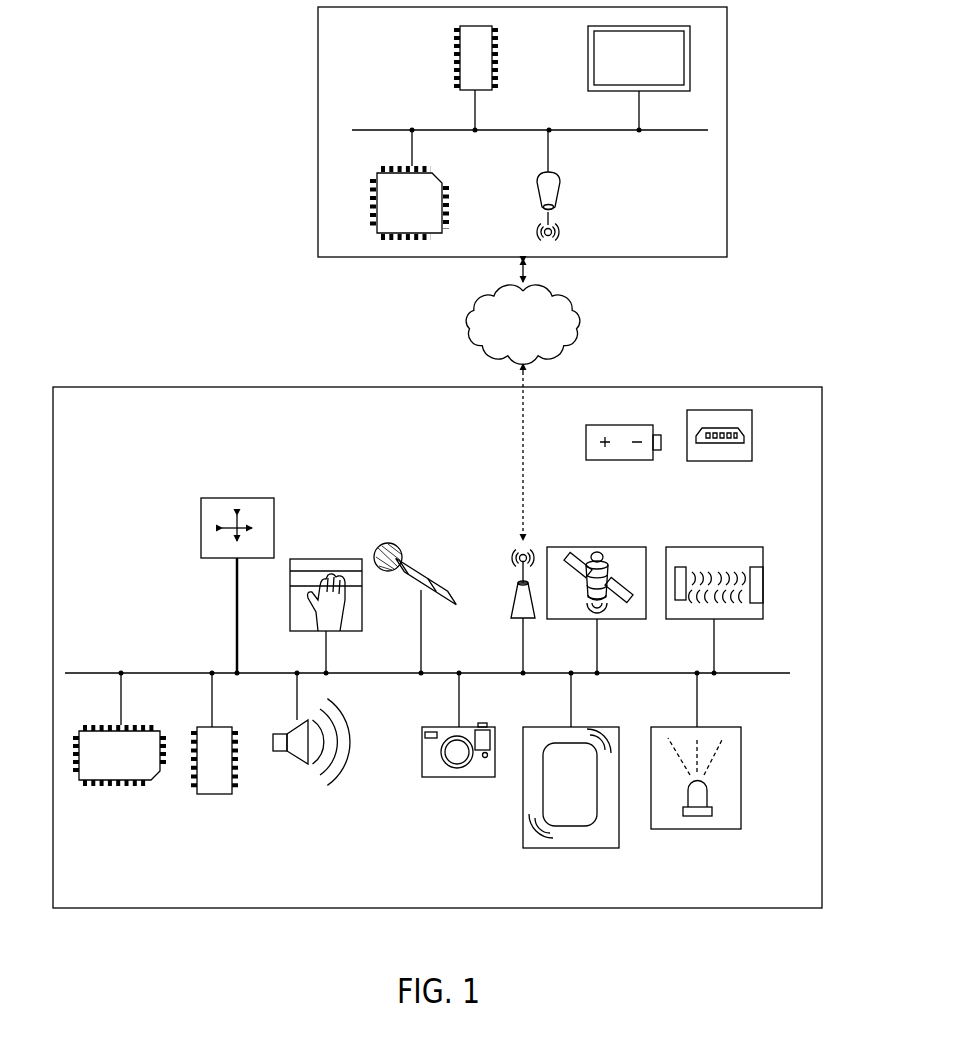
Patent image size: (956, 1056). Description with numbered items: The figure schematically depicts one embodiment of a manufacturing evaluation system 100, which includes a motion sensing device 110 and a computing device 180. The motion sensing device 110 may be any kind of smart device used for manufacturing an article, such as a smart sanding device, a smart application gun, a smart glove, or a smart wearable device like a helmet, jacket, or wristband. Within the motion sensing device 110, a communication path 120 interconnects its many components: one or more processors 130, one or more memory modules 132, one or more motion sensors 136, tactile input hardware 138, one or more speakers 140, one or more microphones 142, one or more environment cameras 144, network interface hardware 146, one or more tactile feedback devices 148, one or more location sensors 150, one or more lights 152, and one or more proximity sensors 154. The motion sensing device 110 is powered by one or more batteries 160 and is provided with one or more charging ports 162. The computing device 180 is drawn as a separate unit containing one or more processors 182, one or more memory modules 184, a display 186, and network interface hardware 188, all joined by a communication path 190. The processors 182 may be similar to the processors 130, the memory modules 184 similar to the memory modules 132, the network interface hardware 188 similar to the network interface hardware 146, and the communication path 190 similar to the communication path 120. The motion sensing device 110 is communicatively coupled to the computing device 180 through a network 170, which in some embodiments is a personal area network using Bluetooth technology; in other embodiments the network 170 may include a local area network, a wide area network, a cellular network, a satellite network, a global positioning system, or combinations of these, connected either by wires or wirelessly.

The manufacturing evaluation system 100 is at (756, 328).
The motion sensing device 110 is at (780, 387).
The communication path 120 is at (105, 673).
The processors 130 is at (153, 775).
The memory modules 132 is at (212, 794).
The motion sensors 136 is at (238, 498).
The tactile input hardware 138 is at (326, 559).
The speakers 140 is at (294, 762).
The microphones 142 is at (421, 565).
The environment cameras 144 is at (458, 777).
The network interface hardware 146 is at (514, 592).
The tactile feedback devices 148 is at (571, 848).
The location sensors 150 is at (597, 547).
The lights 152 is at (697, 829).
The proximity sensors 154 is at (716, 547).
The batteries 160 is at (645, 461).
The charging ports 162 is at (752, 437).
The network 170 is at (466, 327).
The computing device 180 is at (727, 62).
The processors 182 is at (447, 215).
The memory modules 184 is at (457, 58).
The display 186 is at (588, 60).
The network interface hardware 188 is at (561, 191).
The communication path 190 is at (665, 132).